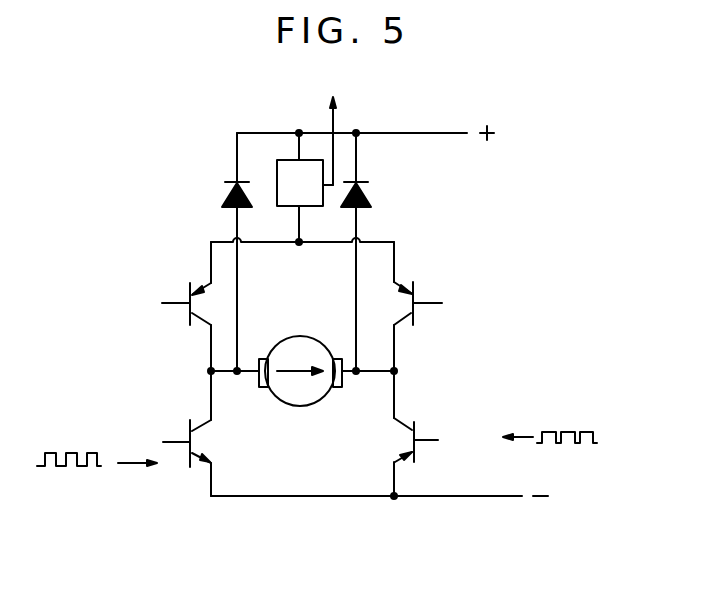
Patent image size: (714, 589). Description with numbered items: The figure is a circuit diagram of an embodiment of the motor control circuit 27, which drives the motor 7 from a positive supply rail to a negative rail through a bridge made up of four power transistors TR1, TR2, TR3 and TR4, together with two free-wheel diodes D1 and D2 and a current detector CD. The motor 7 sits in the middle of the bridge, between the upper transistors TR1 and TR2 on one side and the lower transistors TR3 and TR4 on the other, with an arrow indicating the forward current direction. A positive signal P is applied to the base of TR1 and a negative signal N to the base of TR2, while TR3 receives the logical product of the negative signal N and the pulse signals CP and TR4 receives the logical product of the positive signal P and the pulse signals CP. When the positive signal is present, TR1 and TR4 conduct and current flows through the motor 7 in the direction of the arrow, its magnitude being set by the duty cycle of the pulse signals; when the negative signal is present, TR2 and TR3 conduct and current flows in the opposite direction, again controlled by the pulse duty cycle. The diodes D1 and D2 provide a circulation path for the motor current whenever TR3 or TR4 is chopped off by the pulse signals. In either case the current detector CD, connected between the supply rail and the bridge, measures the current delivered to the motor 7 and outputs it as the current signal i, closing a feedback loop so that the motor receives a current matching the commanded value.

The motor control circuit 27 is at (270, 106).
The free-wheel diode D1 is at (226, 204).
The free-wheel diode D2 is at (372, 197).
The current detector CD is at (300, 183).
The power transistor TR1 is at (195, 290).
The power transistor TR2 is at (415, 290).
The power transistor TR3 is at (189, 424).
The power transistor TR4 is at (416, 423).
The motor 7 is at (292, 335).